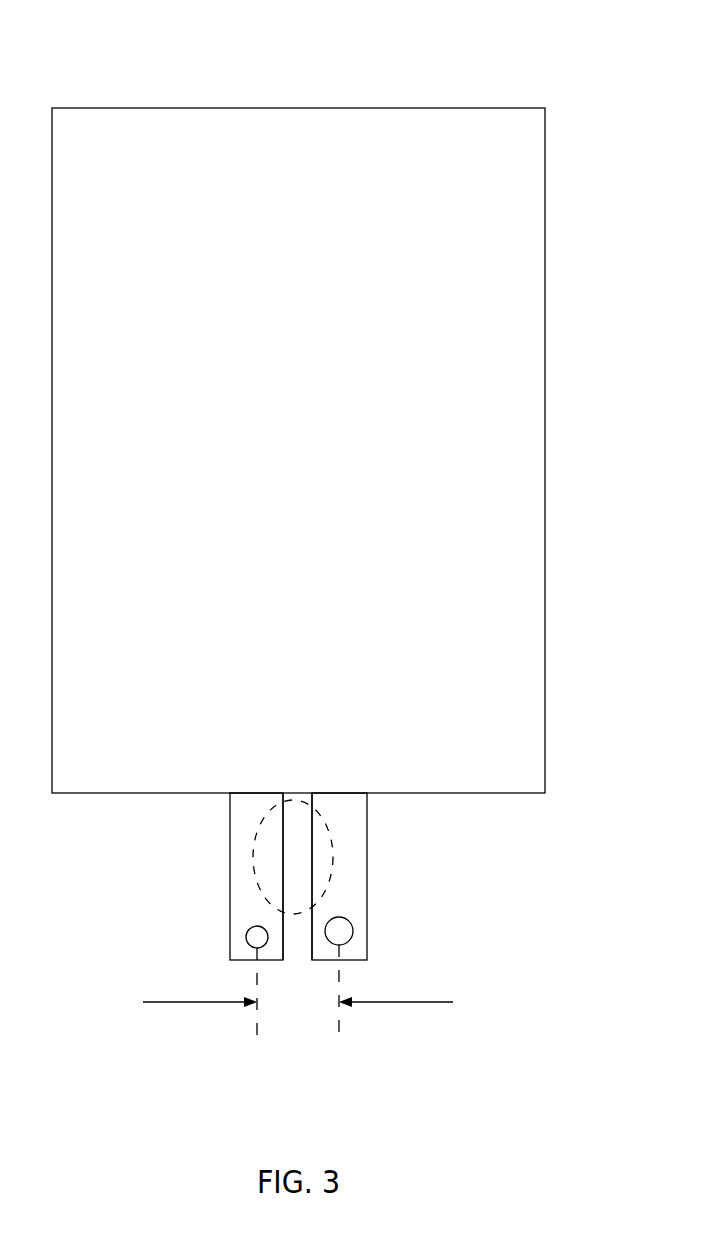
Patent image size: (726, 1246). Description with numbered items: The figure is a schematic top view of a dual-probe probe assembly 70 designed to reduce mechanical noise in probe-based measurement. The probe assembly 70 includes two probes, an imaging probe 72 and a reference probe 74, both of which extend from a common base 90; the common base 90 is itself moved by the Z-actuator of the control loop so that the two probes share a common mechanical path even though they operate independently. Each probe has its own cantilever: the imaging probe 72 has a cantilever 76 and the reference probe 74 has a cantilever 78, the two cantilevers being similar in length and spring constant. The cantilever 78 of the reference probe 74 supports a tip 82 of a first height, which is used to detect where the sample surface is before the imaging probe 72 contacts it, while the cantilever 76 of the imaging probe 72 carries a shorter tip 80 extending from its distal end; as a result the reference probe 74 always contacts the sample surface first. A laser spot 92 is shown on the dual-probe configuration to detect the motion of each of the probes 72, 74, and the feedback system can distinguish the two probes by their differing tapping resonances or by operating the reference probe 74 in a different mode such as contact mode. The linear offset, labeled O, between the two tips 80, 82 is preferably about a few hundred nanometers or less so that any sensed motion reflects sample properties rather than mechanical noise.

The probe assembly 70 is at (470, 47).
The common base 90 is at (545, 470).
The imaging probe 72 is at (136, 904).
The reference probe 74 is at (432, 912).
The cantilever 76 is at (238, 829).
The cantilever 78 is at (352, 863).
The tip 80 is at (246, 937).
The tip 82 is at (351, 929).
The laser spot 92 is at (355, 823).